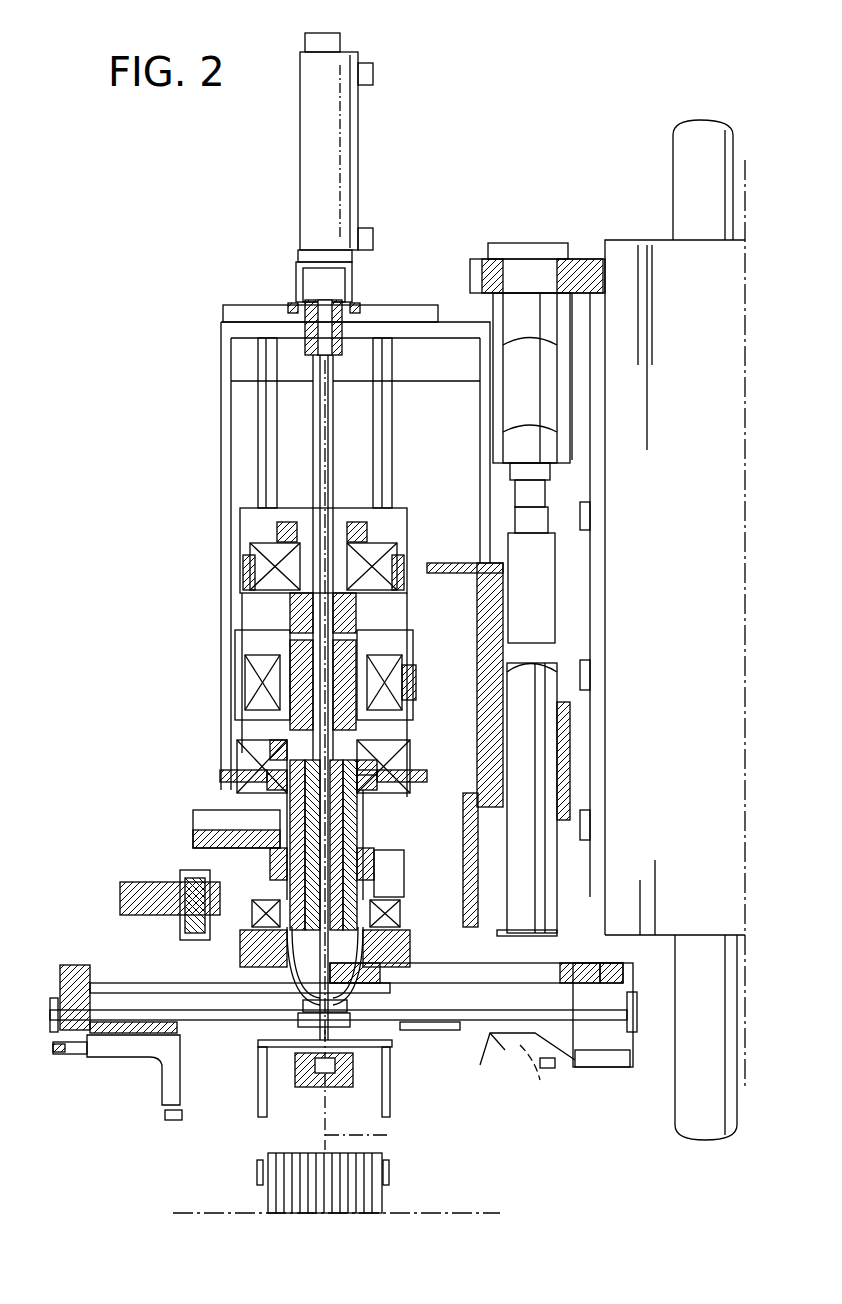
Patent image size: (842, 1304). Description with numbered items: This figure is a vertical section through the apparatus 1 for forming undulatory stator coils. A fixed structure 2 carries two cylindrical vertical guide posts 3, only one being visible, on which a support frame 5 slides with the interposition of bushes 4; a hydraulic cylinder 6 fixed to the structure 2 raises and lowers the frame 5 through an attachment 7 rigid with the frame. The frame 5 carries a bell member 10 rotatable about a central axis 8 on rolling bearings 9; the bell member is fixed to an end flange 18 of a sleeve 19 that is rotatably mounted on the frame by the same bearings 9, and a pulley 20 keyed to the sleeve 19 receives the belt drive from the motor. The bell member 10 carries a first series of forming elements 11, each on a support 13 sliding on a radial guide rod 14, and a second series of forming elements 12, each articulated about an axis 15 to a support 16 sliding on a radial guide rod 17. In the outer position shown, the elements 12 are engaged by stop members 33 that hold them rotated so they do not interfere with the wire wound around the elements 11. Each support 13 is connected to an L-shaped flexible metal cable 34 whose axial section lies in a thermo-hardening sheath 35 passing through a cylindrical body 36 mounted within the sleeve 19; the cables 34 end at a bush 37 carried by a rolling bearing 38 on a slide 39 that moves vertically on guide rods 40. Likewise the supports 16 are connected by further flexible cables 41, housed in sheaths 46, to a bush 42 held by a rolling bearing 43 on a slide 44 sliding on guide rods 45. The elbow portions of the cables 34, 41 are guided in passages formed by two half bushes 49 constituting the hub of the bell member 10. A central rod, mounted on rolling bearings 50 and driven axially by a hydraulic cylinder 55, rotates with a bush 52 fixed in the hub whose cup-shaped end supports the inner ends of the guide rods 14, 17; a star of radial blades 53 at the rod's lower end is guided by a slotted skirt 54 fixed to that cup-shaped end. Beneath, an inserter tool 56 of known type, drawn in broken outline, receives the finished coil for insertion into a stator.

The apparatus 1 is at (170, 525).
The fixed structure 2 is at (582, 597).
The cylindrical vertical guide post 3 is at (525, 880).
The bush 4 is at (562, 750).
The support frame 5 is at (216, 553).
The hydraulic cylinder 6 is at (245, 895).
The attachment 7 is at (540, 622).
The axis 8 is at (368, 1132).
The rolling bearing 9 is at (258, 775).
The bell member 10 is at (78, 958).
The forming element 11 is at (170, 1095).
The forming element 12 is at (520, 1060).
The support 13 is at (160, 1035).
The guide rod 14 is at (220, 1015).
The axis 15 is at (555, 1068).
The support 16 is at (600, 1068).
The radial guide rod 17 is at (455, 1030).
The end flange 18 is at (395, 885).
The sleeve 19 is at (532, 860).
The pulley 20 is at (193, 825).
The stop member 33 is at (590, 1070).
The flexible metal cable 34 is at (183, 990).
The sheath 35 is at (277, 748).
The cylindrical body 36 is at (345, 770).
The bush 37 is at (370, 640).
The rolling bearing 38 is at (380, 660).
The slide 39 is at (410, 690).
The guide rod 40 is at (262, 418).
The flexible cable 41 is at (510, 965).
The bush 42 is at (290, 618).
The rolling bearing 43 is at (378, 540).
The slide 44 is at (425, 548).
The guide rod 45 is at (382, 455).
The sheath 46 is at (400, 790).
The half bush 49 is at (345, 995).
The rolling bearing 50 is at (302, 322).
The bush 52 is at (340, 1012).
The radial blade 53 is at (290, 1085).
The slotted skirt 54 is at (392, 1090).
The hydraulic cylinder 55 is at (300, 165).
The inserter tool 56 is at (255, 1180).